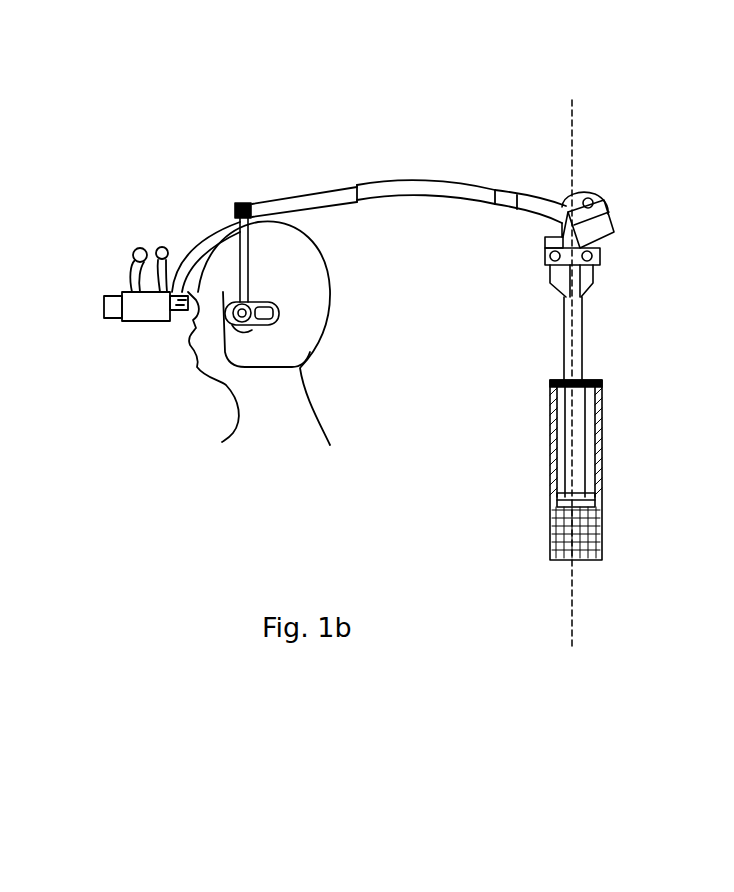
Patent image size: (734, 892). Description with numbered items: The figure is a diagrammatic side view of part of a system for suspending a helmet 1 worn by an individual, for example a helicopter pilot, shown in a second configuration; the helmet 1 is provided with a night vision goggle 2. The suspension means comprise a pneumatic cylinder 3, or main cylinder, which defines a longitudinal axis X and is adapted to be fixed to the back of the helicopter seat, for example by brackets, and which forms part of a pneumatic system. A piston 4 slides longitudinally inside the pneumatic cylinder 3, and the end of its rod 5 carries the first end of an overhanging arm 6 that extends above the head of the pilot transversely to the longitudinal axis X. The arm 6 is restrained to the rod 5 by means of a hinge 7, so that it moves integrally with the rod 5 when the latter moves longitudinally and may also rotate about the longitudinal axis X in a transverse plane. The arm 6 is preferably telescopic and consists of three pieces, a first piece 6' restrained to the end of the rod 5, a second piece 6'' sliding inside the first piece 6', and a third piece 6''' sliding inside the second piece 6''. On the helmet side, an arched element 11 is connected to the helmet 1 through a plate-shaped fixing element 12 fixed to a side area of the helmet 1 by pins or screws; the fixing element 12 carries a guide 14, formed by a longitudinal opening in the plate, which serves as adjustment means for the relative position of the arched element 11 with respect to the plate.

The helmet 1 is at (284, 284).
The night vision goggle 2 is at (143, 305).
The pneumatic cylinder 3 is at (620, 446).
The piston 4 is at (590, 503).
The rod 5 is at (578, 330).
The arm 6 is at (409, 112).
The first piece 6' is at (530, 152).
The second piece 6'' is at (426, 142).
The third piece 6''' is at (304, 149).
The hinge 7 is at (590, 258).
The arched element 11 is at (245, 258).
The fixing element 12 is at (256, 335).
The guide 14 is at (276, 318).
The longitudinal axis X is at (572, 153).